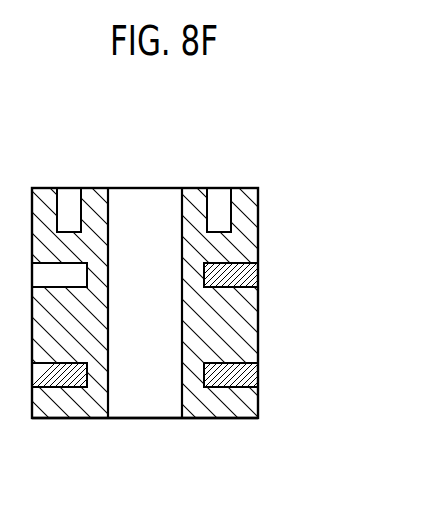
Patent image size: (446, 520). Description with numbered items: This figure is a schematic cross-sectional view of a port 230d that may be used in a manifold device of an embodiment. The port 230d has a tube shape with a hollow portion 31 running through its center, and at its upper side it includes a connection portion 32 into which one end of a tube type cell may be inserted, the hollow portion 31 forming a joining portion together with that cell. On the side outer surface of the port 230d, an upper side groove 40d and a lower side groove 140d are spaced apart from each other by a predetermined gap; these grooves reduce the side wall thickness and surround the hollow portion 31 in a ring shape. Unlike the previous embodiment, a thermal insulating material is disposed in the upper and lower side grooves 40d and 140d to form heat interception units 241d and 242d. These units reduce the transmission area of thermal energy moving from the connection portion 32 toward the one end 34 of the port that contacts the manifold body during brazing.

The port 230d is at (310, 174).
The hollow portion 31 is at (152, 195).
The connection portion 32 is at (221, 193).
The one end of the port 34 is at (220, 419).
The upper side groove 40d is at (232, 264).
The heat interception unit 241d is at (250, 277).
The lower side groove 140d is at (232, 364).
The heat interception unit 242d is at (250, 377).